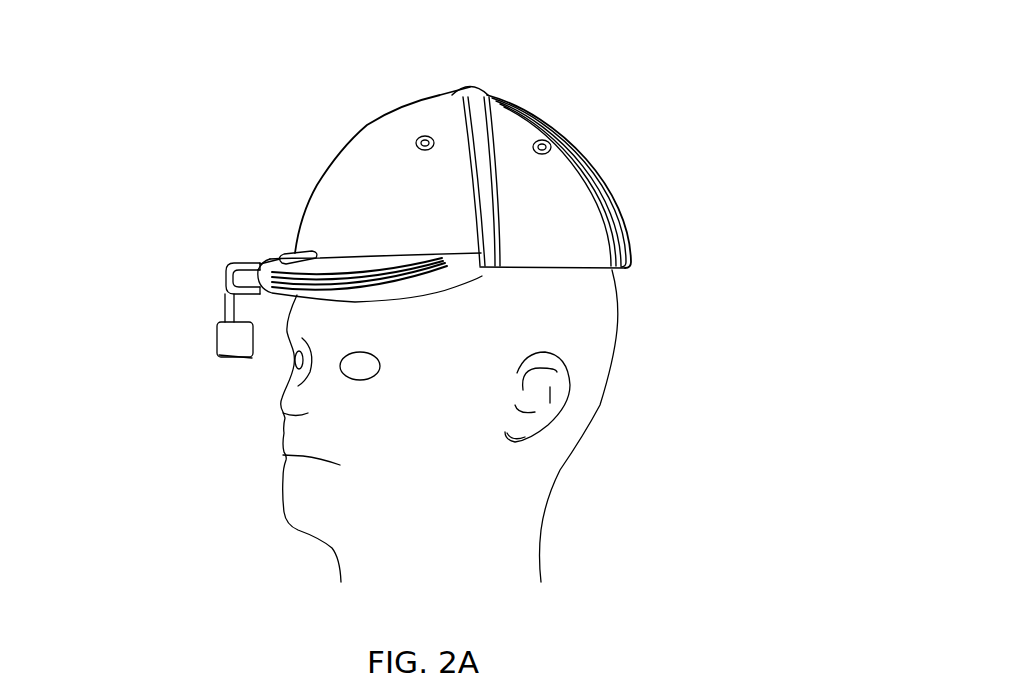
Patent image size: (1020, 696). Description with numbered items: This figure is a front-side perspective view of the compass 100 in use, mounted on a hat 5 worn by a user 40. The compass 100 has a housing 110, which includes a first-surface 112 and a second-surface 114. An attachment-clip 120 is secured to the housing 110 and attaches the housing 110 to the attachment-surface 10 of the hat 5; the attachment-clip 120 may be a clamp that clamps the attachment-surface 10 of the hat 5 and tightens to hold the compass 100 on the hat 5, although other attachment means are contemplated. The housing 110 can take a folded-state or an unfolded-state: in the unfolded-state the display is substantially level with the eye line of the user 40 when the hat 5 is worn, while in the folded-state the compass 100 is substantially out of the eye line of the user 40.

The compass 100 is at (809, 41).
The hat 5 is at (558, 190).
The attachment-surface 10 is at (352, 261).
The user 40 is at (572, 347).
The housing 110 is at (222, 326).
The first-surface 112 is at (227, 354).
The second-surface 114 is at (243, 358).
The attachment-clip 120 is at (242, 264).